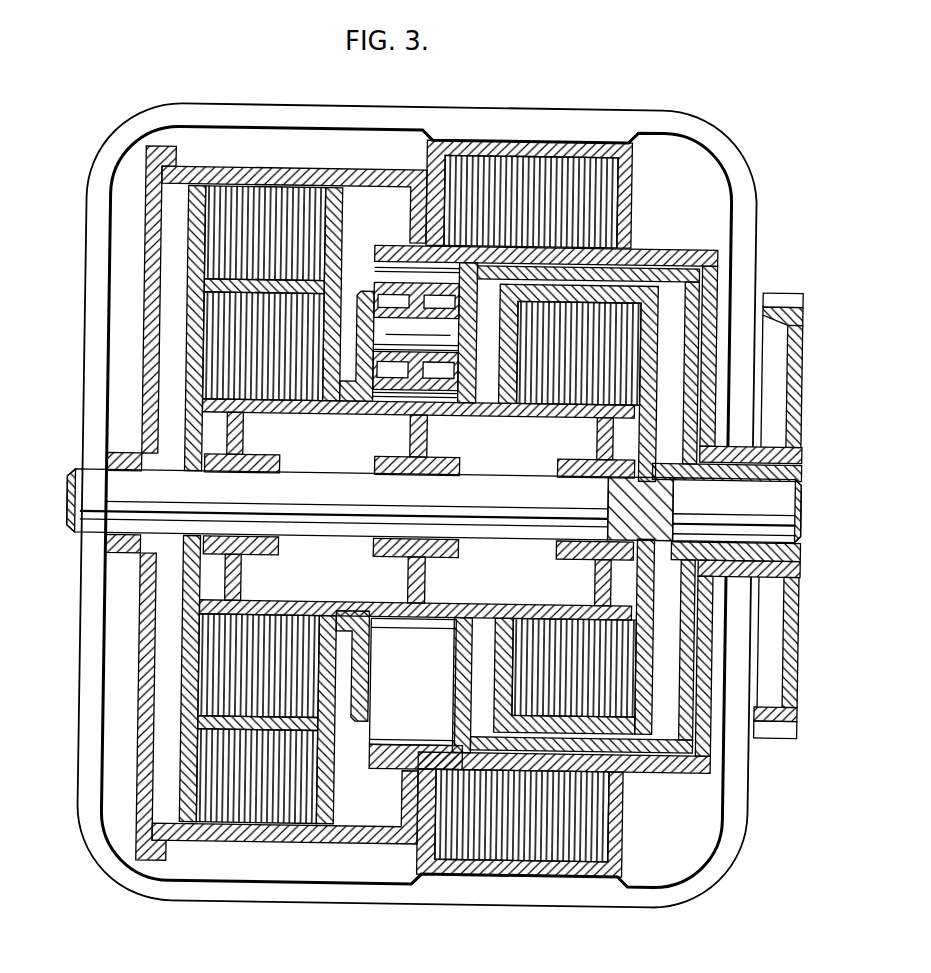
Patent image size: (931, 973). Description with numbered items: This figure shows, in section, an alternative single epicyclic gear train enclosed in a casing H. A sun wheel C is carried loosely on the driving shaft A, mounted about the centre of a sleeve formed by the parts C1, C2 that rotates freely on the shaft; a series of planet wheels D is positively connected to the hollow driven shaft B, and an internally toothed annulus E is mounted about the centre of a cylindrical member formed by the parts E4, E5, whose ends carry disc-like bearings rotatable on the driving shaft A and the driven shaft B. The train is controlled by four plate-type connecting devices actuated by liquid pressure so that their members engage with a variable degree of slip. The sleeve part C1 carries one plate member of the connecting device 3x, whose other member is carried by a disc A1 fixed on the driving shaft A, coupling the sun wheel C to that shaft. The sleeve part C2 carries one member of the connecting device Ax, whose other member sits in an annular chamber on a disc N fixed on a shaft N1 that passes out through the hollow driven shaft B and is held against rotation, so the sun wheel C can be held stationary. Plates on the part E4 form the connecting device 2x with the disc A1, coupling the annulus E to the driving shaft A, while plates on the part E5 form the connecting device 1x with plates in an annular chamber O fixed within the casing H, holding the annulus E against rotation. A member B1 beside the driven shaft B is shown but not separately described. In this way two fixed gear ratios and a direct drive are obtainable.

The casing H is at (383, 126).
The cylindrical member part E4 is at (290, 173).
The connecting device 2x is at (256, 202).
The connecting device 3x is at (230, 336).
The connecting device 1x is at (510, 168).
The annular chamber O is at (561, 148).
The planet wheels D is at (388, 278).
The cylindrical member part E5 is at (636, 246).
The connecting device Ax is at (605, 315).
The upper bearing bracket B1 is at (781, 300).
The disc A1 is at (193, 386).
The driving shaft A is at (338, 504).
The sleeve part C1 is at (307, 410).
The sleeve part C2 is at (528, 410).
The shaft N1 is at (737, 510).
The driven shaft B is at (775, 552).
The disc N is at (642, 669).
The sun wheel C is at (413, 620).
The internally toothed annulus E is at (413, 745).